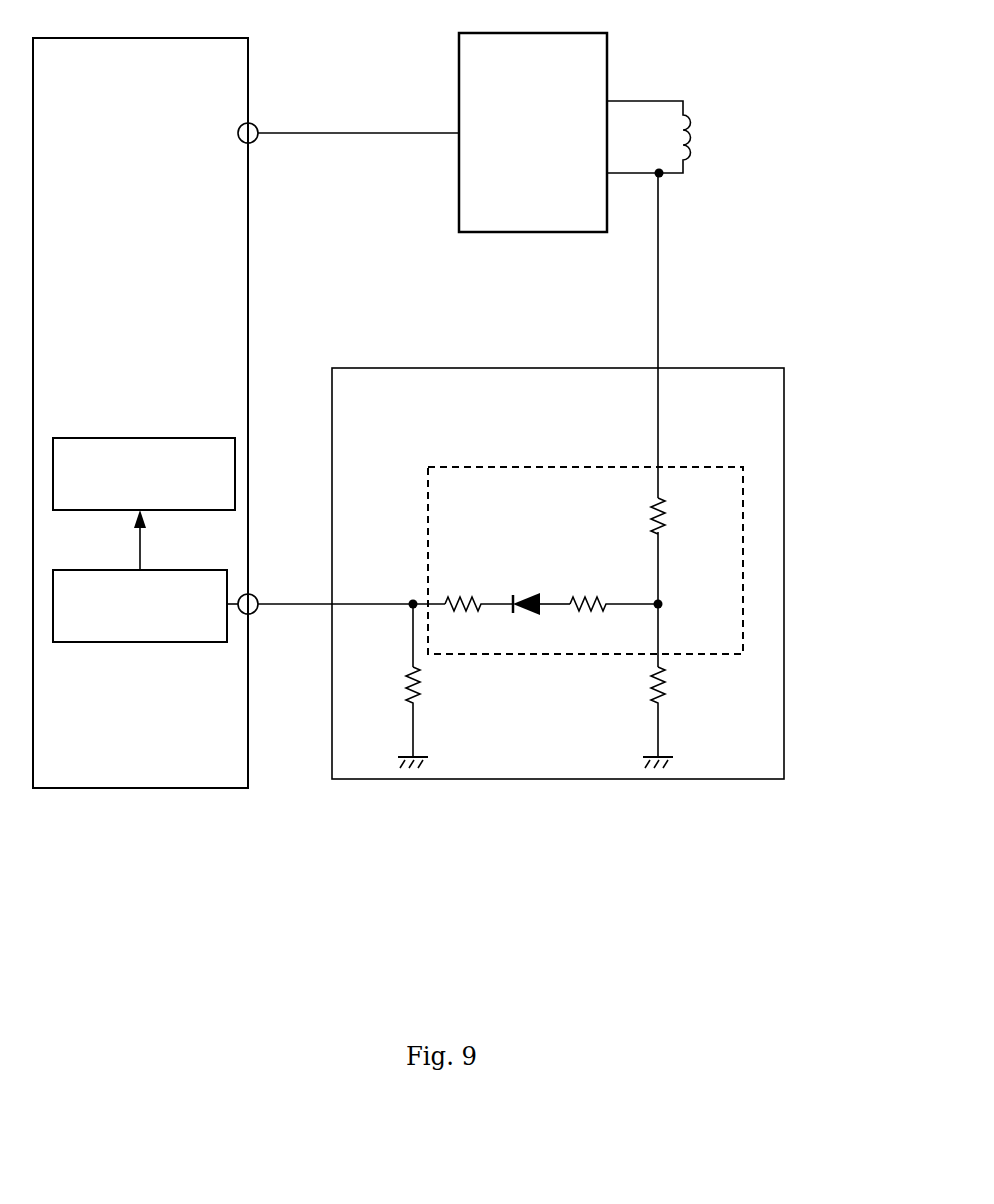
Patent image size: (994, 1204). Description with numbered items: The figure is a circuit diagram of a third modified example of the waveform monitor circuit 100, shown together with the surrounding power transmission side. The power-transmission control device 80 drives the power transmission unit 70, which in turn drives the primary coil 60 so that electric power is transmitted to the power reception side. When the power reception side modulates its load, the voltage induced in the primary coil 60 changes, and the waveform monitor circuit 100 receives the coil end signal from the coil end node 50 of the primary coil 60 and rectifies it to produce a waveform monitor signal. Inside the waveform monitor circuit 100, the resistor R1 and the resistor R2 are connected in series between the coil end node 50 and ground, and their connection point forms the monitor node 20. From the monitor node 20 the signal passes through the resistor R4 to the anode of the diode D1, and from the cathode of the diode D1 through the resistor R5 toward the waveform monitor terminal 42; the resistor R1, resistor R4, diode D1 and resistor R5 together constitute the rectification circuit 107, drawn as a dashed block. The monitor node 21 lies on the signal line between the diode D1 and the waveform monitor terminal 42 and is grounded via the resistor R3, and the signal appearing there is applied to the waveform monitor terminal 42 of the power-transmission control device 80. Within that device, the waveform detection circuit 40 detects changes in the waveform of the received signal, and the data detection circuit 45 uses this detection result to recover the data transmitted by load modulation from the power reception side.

The power-transmission control device 80 is at (249, 212).
The power transmission unit 70 is at (518, 233).
The primary coil 60 is at (702, 140).
The coil end node 50 is at (661, 177).
The waveform monitor circuit 100 is at (786, 487).
The rectification circuit 107 is at (610, 466).
The monitor node 21 is at (410, 603).
The monitor node 20 is at (662, 606).
The data detection circuit 45 is at (205, 511).
The waveform detection circuit 40 is at (163, 643).
The waveform monitor terminal 42 is at (251, 615).
The resistor R1 is at (639, 551).
The resistor R2 is at (640, 686).
The resistor R3 is at (431, 686).
The resistor R4 is at (614, 622).
The resistor R5 is at (479, 622).
The diode D1 is at (541, 621).